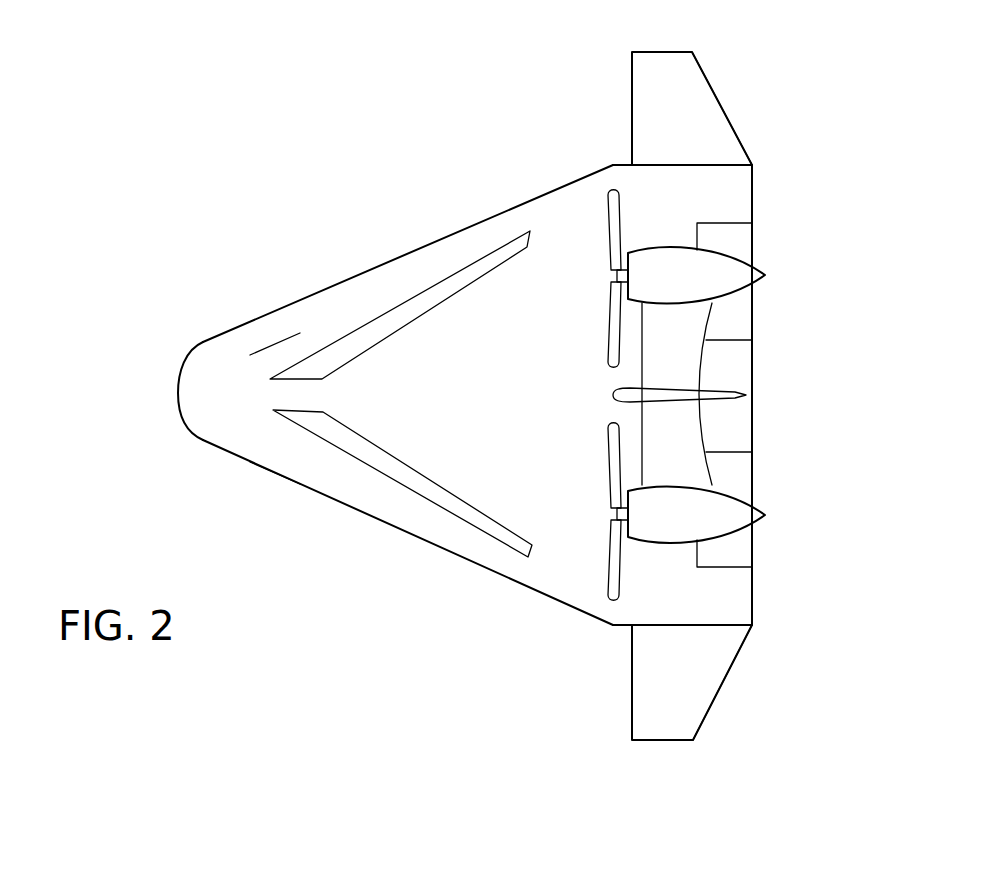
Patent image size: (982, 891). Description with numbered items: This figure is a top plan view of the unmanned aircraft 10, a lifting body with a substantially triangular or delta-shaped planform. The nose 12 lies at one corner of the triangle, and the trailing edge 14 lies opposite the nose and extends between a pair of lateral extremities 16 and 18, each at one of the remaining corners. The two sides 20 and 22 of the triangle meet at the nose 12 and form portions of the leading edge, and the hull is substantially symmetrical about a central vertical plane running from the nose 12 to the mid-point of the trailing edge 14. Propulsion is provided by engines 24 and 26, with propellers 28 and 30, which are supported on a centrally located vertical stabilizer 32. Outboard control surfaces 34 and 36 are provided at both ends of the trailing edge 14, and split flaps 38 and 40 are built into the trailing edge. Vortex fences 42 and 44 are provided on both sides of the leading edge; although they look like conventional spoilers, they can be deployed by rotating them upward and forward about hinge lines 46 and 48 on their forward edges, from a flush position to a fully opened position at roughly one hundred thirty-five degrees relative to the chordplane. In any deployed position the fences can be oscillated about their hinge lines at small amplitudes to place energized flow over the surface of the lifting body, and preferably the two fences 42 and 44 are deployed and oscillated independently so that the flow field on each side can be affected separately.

The aircraft 10 is at (340, 287).
The nose 12 is at (180, 418).
The trailing edge 14 is at (755, 415).
The lateral extremity 16 is at (712, 625).
The lateral extremity 18 is at (712, 160).
The side 20 is at (382, 522).
The side 22 is at (415, 247).
The engine 24 is at (742, 517).
The engine 26 is at (742, 282).
The propeller 28 is at (613, 572).
The propeller 30 is at (613, 315).
The vertical stabilizer 32 is at (718, 387).
The outboard control surface 34 is at (683, 703).
The outboard control surface 36 is at (695, 85).
The split flap 38 is at (753, 475).
The split flap 40 is at (742, 242).
The vortex fence 42 is at (385, 453).
The vortex fence 44 is at (393, 322).
The hinge line 46 is at (325, 445).
The hinge line 48 is at (312, 352).